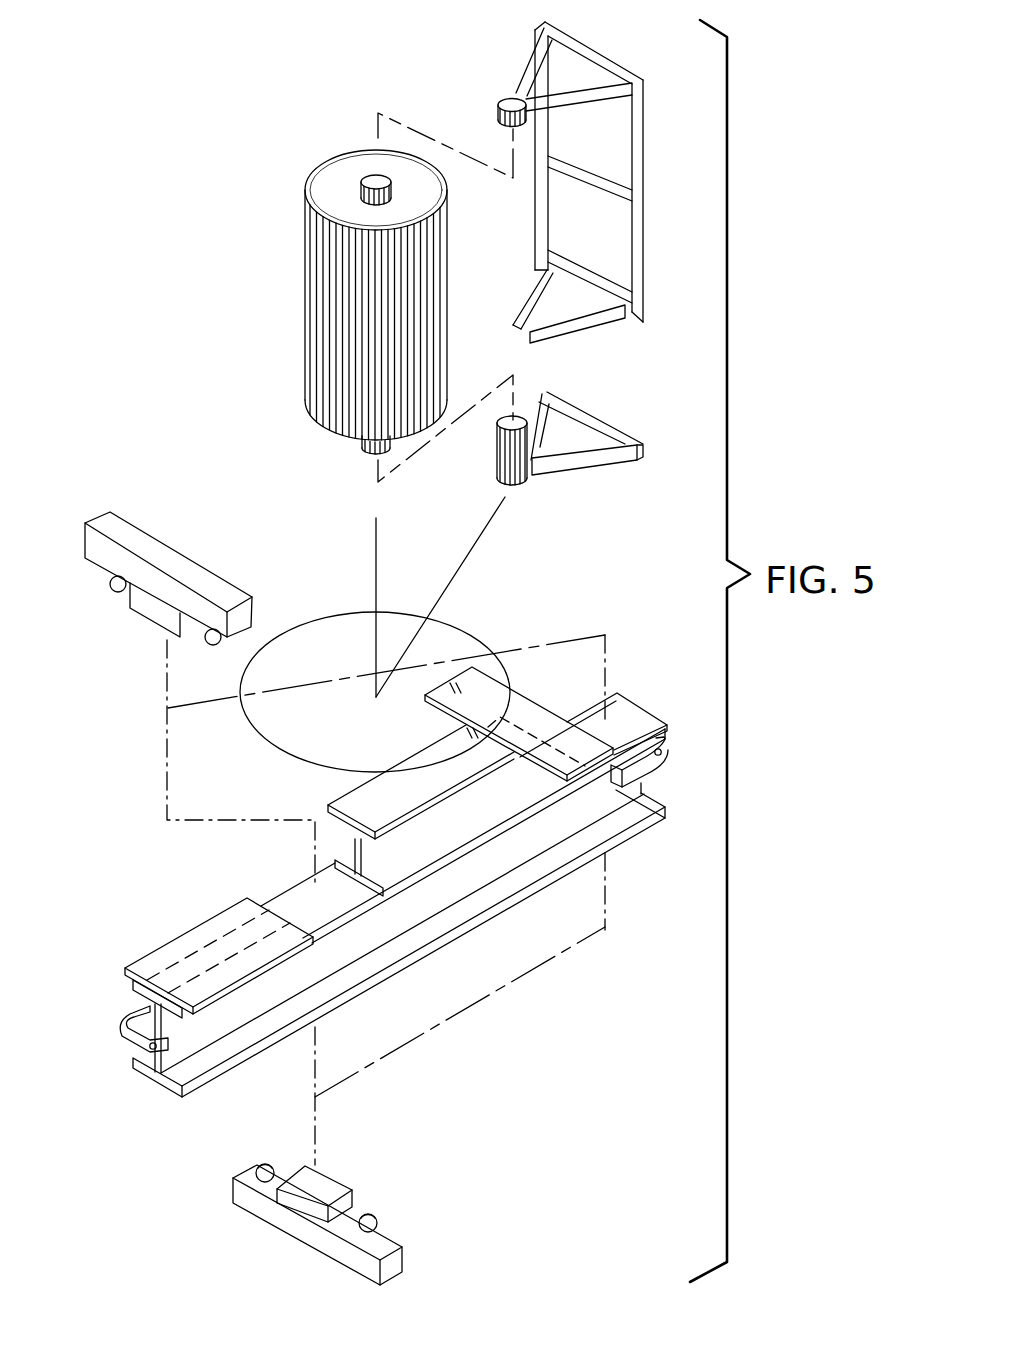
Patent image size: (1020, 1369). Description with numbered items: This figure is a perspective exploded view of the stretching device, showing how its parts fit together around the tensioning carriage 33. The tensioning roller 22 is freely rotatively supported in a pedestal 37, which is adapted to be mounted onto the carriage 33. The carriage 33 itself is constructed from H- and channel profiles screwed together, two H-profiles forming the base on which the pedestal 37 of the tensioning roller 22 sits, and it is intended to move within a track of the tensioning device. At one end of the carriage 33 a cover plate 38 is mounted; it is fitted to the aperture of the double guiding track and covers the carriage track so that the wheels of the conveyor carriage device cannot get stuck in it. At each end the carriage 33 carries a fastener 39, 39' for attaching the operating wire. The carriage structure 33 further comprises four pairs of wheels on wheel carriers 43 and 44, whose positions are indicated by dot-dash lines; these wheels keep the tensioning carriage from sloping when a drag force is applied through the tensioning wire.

The tensioning roller 22 is at (304, 245).
The pedestal 37 is at (643, 173).
The wheel carrier 44 is at (240, 552).
The tensioning carriage 33 is at (482, 978).
The cover plate 38 is at (191, 940).
The wire fastener 39 is at (636, 732).
The wire fastener 39' is at (104, 1061).
The wheel carrier 43 is at (297, 1223).